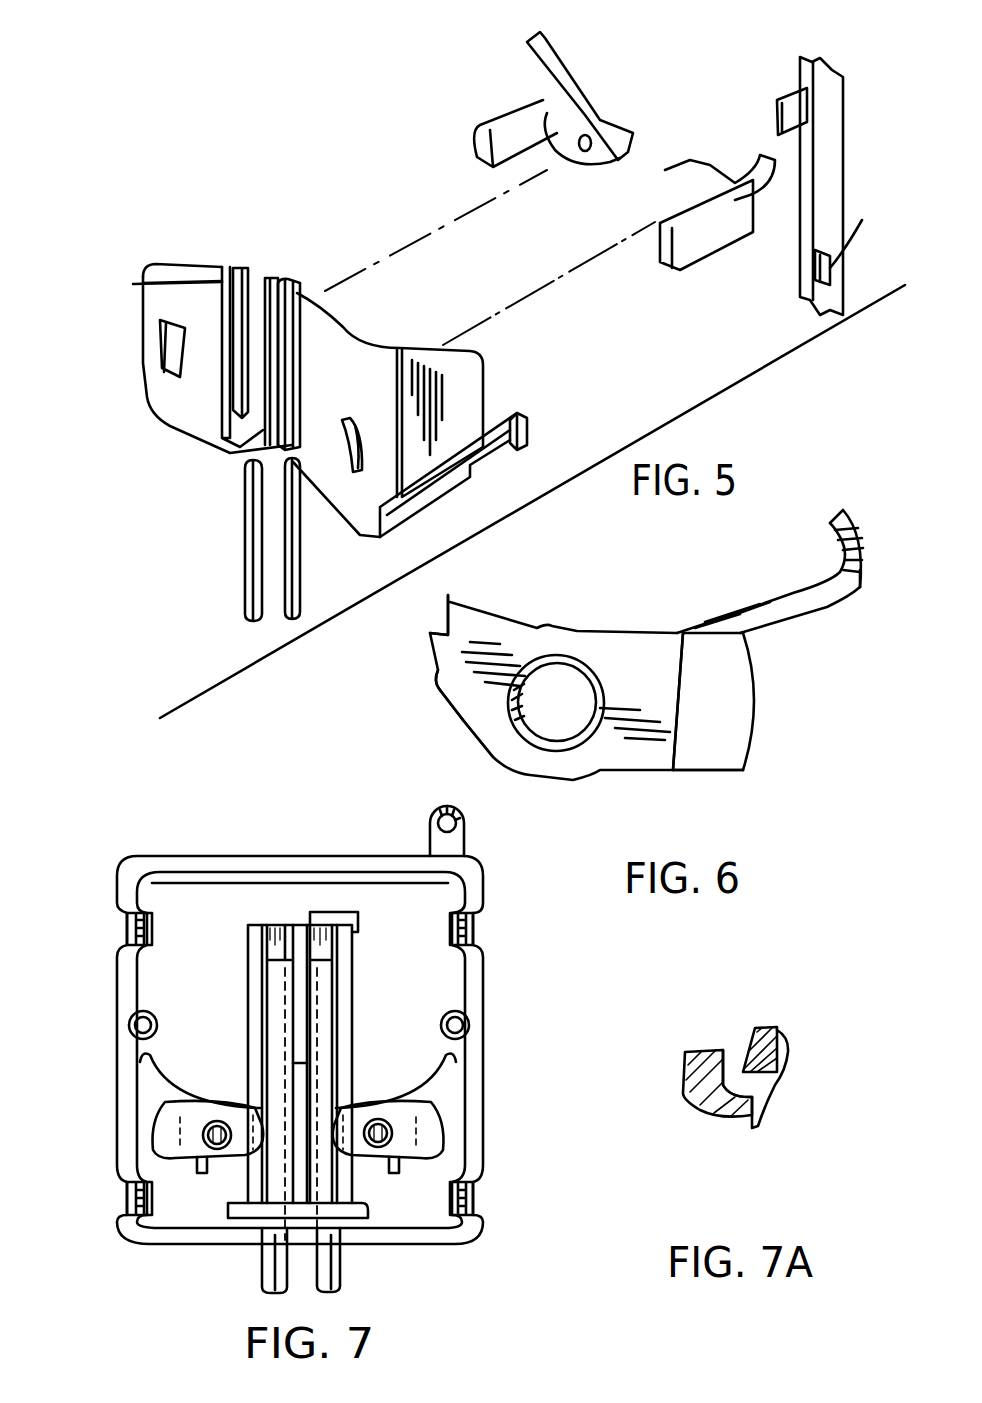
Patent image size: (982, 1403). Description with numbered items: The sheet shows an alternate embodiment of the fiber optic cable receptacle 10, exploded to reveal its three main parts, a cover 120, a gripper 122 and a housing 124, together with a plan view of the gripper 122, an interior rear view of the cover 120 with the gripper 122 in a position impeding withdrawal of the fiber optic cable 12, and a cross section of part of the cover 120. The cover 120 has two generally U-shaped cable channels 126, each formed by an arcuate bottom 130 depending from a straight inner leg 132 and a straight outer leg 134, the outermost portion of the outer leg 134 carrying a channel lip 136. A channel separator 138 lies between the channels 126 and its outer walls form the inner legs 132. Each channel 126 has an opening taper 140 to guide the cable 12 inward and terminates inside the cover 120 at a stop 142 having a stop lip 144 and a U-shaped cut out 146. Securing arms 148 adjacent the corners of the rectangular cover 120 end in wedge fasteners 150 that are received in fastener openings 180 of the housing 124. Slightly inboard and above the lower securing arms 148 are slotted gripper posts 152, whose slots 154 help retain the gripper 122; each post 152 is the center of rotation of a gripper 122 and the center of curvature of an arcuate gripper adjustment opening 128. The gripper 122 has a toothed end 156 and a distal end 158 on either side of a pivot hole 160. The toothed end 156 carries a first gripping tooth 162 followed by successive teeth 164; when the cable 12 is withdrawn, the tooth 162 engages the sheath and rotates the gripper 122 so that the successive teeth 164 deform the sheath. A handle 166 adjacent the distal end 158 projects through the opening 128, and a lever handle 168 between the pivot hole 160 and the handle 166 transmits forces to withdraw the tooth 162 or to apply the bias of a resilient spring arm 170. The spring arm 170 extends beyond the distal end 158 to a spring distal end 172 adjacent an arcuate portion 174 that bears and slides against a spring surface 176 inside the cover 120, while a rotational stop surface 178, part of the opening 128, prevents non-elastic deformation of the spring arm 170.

In FIG. 5, the fiber optic cable receptacle 10 is at (546, 512).
In FIG. 5, the fiber optic cable 12 is at (247, 580).
In FIG. 7, the fiber optic cable 12 is at (262, 1272).
In FIG. 5, the cover 120 is at (160, 397).
In FIG. 7, the cover 120 is at (198, 898).
In FIG. 5, the gripper 122 is at (600, 118).
In FIG. 6, the gripper 122 is at (463, 713).
In FIG. 5, the housing 124 is at (828, 92).
In FIG. 5, the cable channel 126 is at (297, 285).
In FIG. 5, the arcuate gripper adjustment opening 128 is at (170, 340).
In FIG. 5, the arcuate bottom 130 is at (227, 283).
In FIG. 7A, the arcuate bottom 130 is at (733, 1117).
In FIG. 5, the inner leg 132 is at (237, 303).
In FIG. 7A, the inner leg 132 is at (745, 1097).
In FIG. 5, the outer leg 134 is at (156, 279).
In FIG. 7, the outer leg 134 is at (248, 950).
In FIG. 7A, the channel lip 136 is at (770, 1048).
In FIG. 5, the channel separator 138 is at (262, 287).
In FIG. 7, the opening taper 140 is at (360, 1228).
In FIG. 7, the stop 142 is at (268, 925).
In FIG. 7, the stop lip 144 is at (320, 925).
In FIG. 7, the U-shaped cut out 146 is at (328, 925).
In FIG. 5, the securing arm 148 is at (496, 475).
In FIG. 5, the wedge fastener 150 is at (512, 415).
In FIG. 7, the wedge fastener 150 is at (127, 928).
In FIG. 7, the slotted gripper post 152 is at (215, 1110).
In FIG. 7, the slot 154 is at (220, 1150).
In FIG. 6, the toothed end 156 is at (440, 693).
In FIG. 6, the distal end 158 is at (758, 722).
In FIG. 6, the pivot hole 160 is at (573, 727).
In FIG. 6, the first gripping tooth 162 is at (430, 672).
In FIG. 6, the successive teeth 164 is at (448, 600).
In FIG. 5, the handle 166 is at (500, 115).
In FIG. 6, the handle 166 is at (722, 752).
In FIG. 6, the lever handle 168 is at (653, 752).
In FIG. 6, the resilient spring arm 170 is at (787, 597).
In FIG. 6, the spring distal end 172 is at (828, 512).
In FIG. 6, the arcuate portion 174 is at (858, 590).
In FIG. 7, the spring surface 176 is at (455, 1087).
In FIG. 5, the rotational stop surface 178 is at (780, 92).
In FIG. 5, the fastener opening 180 is at (851, 235).